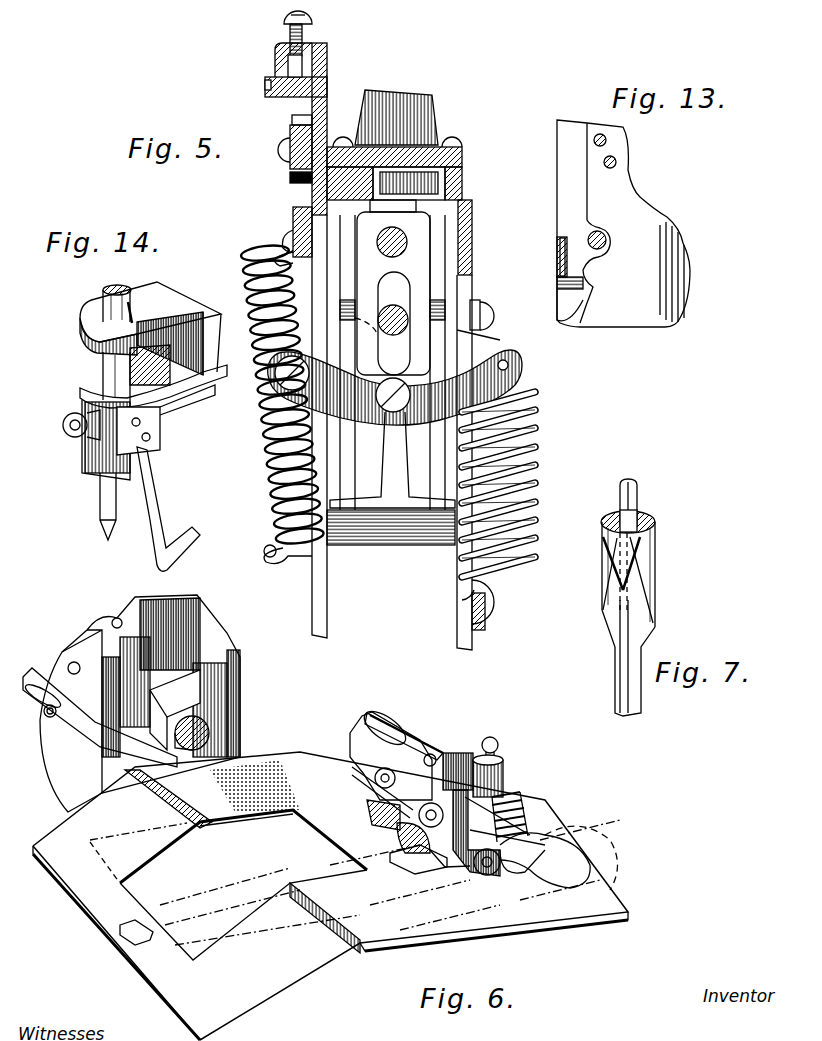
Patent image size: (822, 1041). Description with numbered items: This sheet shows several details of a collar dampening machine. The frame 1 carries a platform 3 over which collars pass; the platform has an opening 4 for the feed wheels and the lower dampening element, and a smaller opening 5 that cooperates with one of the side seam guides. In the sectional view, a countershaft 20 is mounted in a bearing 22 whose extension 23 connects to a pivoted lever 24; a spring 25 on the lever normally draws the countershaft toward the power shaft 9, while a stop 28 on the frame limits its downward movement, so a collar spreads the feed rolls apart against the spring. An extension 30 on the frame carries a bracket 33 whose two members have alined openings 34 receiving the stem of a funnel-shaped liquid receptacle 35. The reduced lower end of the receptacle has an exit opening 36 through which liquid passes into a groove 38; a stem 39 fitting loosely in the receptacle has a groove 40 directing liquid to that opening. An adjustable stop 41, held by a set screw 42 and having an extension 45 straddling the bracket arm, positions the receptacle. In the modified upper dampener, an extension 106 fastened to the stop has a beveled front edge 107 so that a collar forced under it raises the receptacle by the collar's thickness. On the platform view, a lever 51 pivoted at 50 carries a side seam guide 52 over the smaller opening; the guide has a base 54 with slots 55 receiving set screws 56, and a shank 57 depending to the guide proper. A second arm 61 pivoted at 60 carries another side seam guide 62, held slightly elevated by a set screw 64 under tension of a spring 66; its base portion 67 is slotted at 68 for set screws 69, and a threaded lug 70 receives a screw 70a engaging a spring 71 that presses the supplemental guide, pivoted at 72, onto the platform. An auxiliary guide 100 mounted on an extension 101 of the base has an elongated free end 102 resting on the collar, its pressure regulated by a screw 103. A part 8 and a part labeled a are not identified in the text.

In FIG. 5, the frame 1 is at (392, 432).
In FIG. 6, the platform 3 is at (330, 896).
In FIG. 6, the opening 4 is at (370, 885).
In FIG. 6, the smaller opening 5 is at (417, 868).
In FIG. 5, the pivot link 8 is at (356, 318).
In FIG. 5, the power shaft 9 is at (393, 308).
In FIG. 5, the countershaft 20 is at (340, 300).
In FIG. 6, the countershaft 20 is at (207, 734).
In FIG. 5, the bearing 22 is at (420, 226).
In FIG. 6, the bearing 22 is at (175, 692).
In FIG. 5, the extension 23 is at (422, 288).
In FIG. 5, the pivoted lever 24 is at (438, 418).
In FIG. 5, the spring 25 is at (524, 484).
In FIG. 5, the stop 28 is at (482, 312).
In FIG. 6, the stop 28 is at (88, 748).
In FIG. 5, the extension 30 is at (396, 108).
In FIG. 14, the bracket 33 is at (190, 315).
In FIG. 14, the alined opening 34 is at (133, 313).
In FIG. 14, the liquid receptacle 35 is at (102, 358).
In FIG. 7, the liquid receptacle 35 is at (641, 568).
In FIG. 7, the exit opening 36 is at (622, 590).
In FIG. 7, the groove 38 is at (618, 686).
In FIG. 14, the stem 39 is at (118, 286).
In FIG. 7, the stem 39 is at (637, 486).
In FIG. 14, the groove 40 is at (108, 288).
In FIG. 7, the groove 40 is at (620, 492).
In FIG. 14, the adjustable stop 41 is at (82, 390).
In FIG. 14, the set screw 42 is at (68, 432).
In FIG. 14, the extension 45 is at (172, 425).
In FIG. 5, the pivot 50 is at (284, 240).
In FIG. 5, the lever 51 is at (292, 214).
In FIG. 6, the lever 51 is at (375, 745).
In FIG. 5, the side seam guide 52 is at (497, 328).
In FIG. 6, the side seam guide 52 is at (405, 840).
In FIG. 5, the base 54 is at (252, 529).
In FIG. 6, the base 54 is at (375, 775).
In FIG. 6, the slots 55 is at (393, 795).
In FIG. 6, the set screws 56 is at (440, 805).
In FIG. 13, the shank 57 is at (557, 241).
In FIG. 6, the shank 57 is at (385, 820).
In FIG. 5, the pivot 60 is at (288, 130).
In FIG. 5, the second arm 61 is at (274, 188).
In FIG. 6, the second arm 61 is at (420, 755).
In FIG. 6, the side seam guide 62 is at (520, 822).
In FIG. 5, the set screw 64 is at (304, 27).
In FIG. 5, the spring 66 is at (326, 80).
In FIG. 6, the base portion 67 is at (410, 773).
In FIG. 6, the slot 68 is at (563, 852).
In FIG. 6, the set screws 69 is at (498, 740).
In FIG. 6, the threaded lug 70 is at (515, 780).
In FIG. 6, the screw 70a is at (503, 762).
In FIG. 6, the spring 71 is at (525, 802).
In FIG. 6, the pivot 72 is at (492, 868).
In FIG. 13, the auxiliary guide 100 is at (602, 279).
In FIG. 6, the auxiliary guide 100 is at (514, 812).
In FIG. 13, the extension 101 is at (588, 163).
In FIG. 13, the free end 102 is at (646, 327).
In FIG. 6, the free end 102 is at (440, 858).
In FIG. 13, the screw 103 is at (602, 242).
In FIG. 14, the extension 106 is at (152, 508).
In FIG. 14, the beveled front edge 107 is at (160, 568).
In FIG. 5, the spring a is at (262, 480).